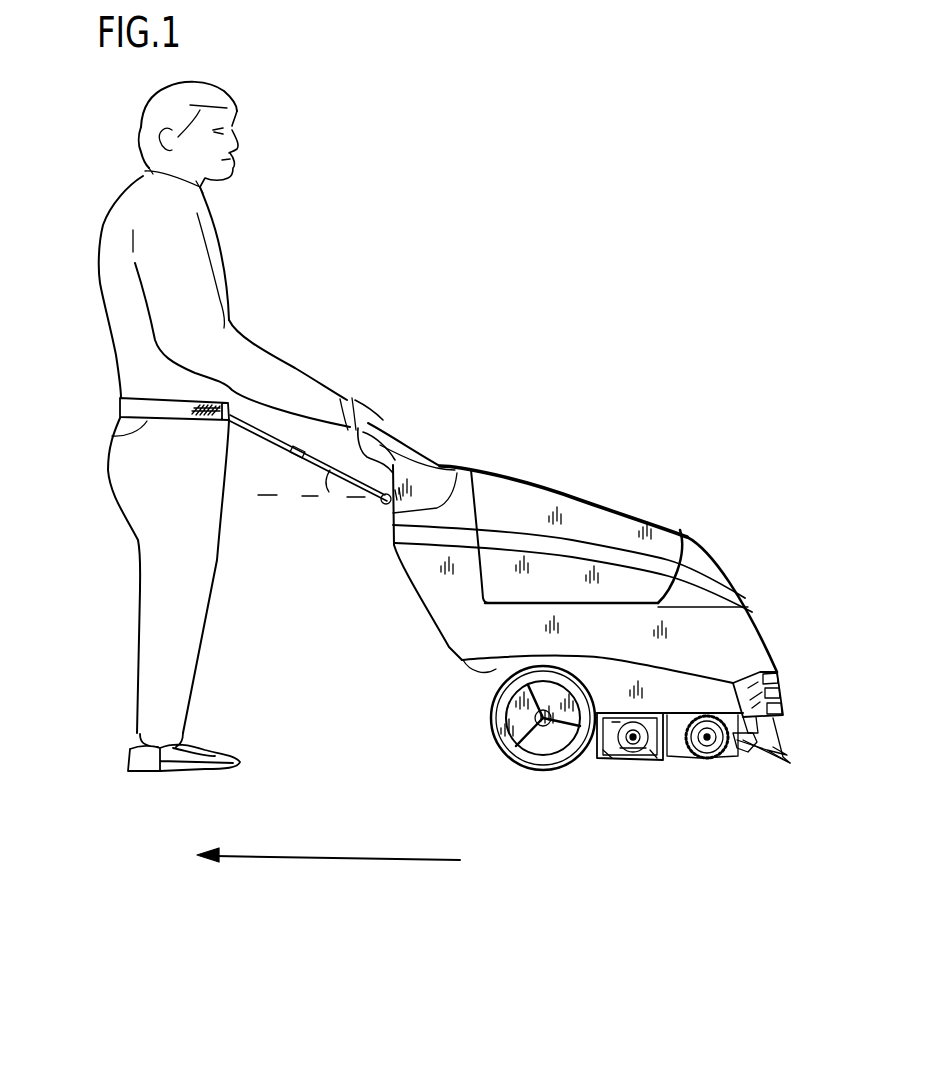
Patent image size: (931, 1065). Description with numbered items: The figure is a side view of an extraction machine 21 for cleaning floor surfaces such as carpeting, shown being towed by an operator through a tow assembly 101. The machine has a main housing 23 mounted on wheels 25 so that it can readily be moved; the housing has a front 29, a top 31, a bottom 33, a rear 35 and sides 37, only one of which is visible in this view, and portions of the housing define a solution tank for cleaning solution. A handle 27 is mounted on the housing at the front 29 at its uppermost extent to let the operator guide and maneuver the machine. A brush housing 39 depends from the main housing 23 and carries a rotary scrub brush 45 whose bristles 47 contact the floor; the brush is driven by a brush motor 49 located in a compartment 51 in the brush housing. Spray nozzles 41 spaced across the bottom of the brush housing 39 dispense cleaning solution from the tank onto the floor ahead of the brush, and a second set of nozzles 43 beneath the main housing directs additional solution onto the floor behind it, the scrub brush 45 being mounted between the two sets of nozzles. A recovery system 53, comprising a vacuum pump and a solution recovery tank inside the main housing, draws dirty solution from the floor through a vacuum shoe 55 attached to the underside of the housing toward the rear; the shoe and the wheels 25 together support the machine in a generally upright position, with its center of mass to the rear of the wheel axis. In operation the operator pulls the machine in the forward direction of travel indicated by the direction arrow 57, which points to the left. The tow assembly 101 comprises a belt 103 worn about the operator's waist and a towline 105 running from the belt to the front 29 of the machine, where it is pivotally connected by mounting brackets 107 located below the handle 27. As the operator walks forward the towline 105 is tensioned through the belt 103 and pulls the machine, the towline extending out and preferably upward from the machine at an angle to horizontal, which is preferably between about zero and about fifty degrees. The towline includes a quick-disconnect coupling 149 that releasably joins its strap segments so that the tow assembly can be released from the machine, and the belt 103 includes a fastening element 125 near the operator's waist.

The extraction machine 21 is at (630, 423).
The main housing 23 is at (449, 647).
The wheels 25 is at (497, 744).
The handle 27 is at (390, 433).
The front 29 is at (393, 553).
The top 31 is at (493, 470).
The bottom 33 is at (583, 760).
The rear 35 is at (777, 663).
The sides 37 is at (598, 624).
The brush housing 39 is at (671, 760).
The spray nozzles 41 is at (685, 762).
The second set of nozzles 43 is at (743, 762).
The rotary scrub brush 45 is at (693, 762).
The bristles 47 is at (707, 762).
The brush motor 49 is at (633, 763).
The compartment 51 is at (610, 763).
The recovery system 53 is at (768, 790).
The vacuum shoe 55 is at (785, 770).
The direction arrow 57 is at (340, 861).
The tow assembly 101 is at (216, 436).
The belt 103 is at (128, 397).
The towline 105 is at (268, 440).
The mounting brackets 107 is at (387, 504).
The belt pad 125 is at (138, 432).
The quick-disconnect coupling 149 is at (295, 466).